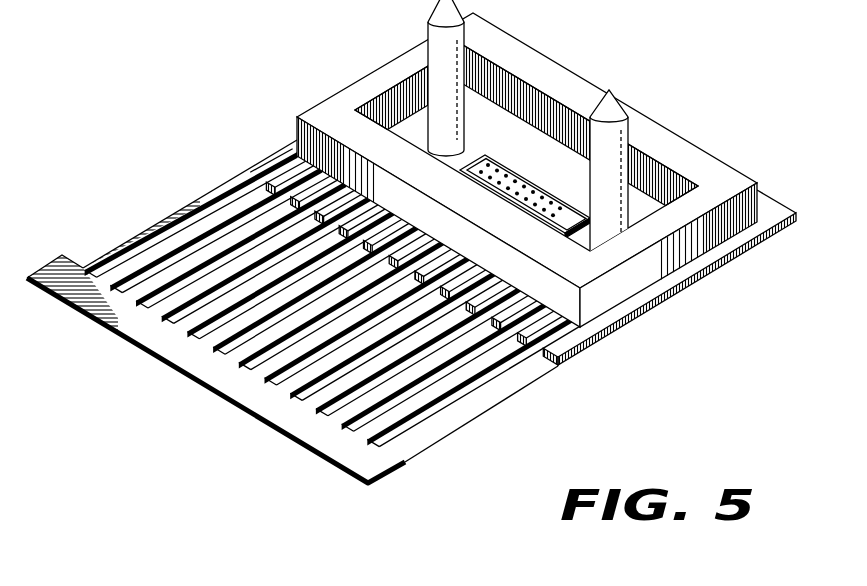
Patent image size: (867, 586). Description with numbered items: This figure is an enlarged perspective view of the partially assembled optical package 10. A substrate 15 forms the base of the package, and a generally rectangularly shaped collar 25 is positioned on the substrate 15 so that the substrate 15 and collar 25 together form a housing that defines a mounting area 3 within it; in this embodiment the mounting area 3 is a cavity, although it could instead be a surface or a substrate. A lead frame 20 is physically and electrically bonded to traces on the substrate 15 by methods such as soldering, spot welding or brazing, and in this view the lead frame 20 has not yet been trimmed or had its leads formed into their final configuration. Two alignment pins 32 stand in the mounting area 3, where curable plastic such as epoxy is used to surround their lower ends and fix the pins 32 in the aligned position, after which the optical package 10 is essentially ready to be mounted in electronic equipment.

The optical package 10 is at (422, 241).
The substrate 15 is at (773, 215).
The lead frame 20 is at (212, 203).
The collar 25 is at (672, 143).
The pins 32 is at (426, 34).
The mounting area 3 is at (537, 113).